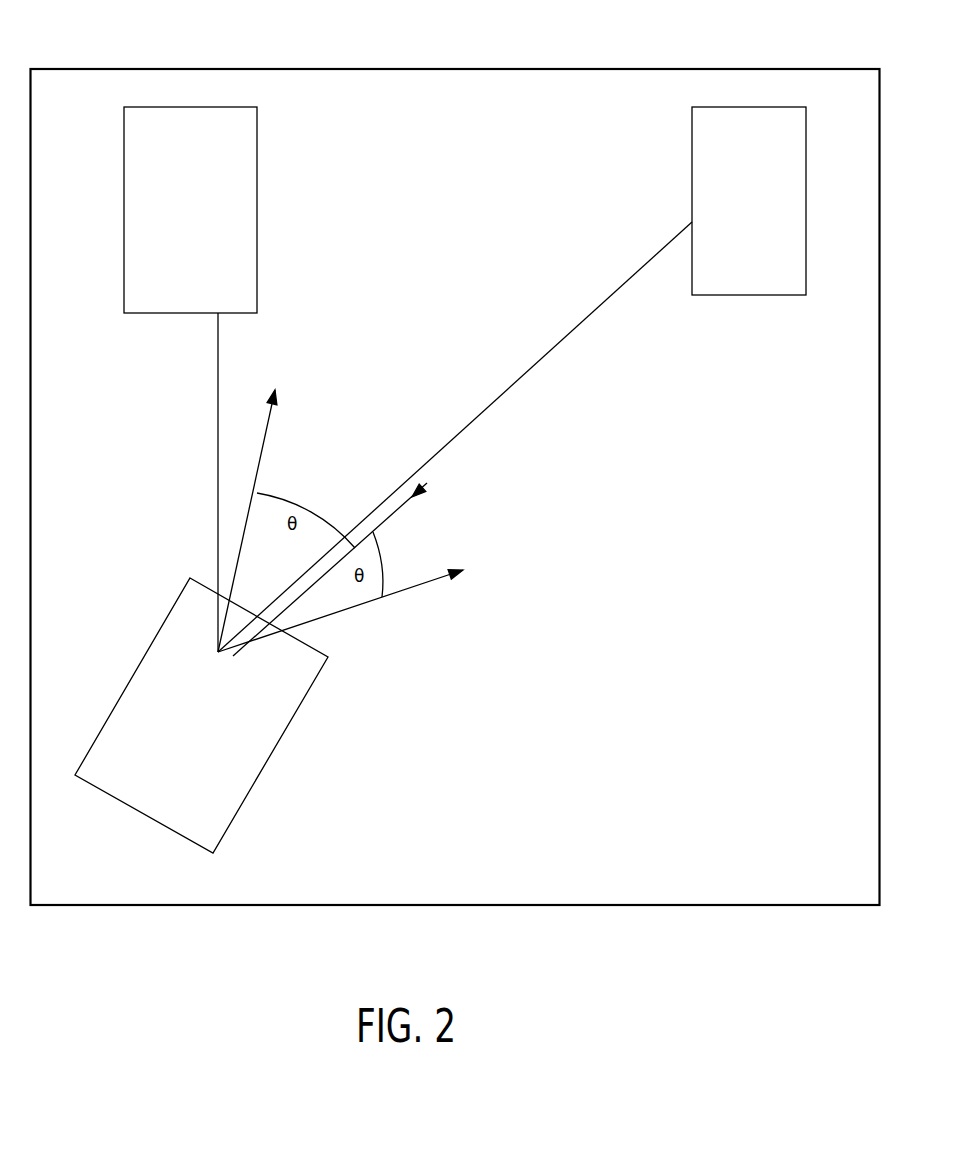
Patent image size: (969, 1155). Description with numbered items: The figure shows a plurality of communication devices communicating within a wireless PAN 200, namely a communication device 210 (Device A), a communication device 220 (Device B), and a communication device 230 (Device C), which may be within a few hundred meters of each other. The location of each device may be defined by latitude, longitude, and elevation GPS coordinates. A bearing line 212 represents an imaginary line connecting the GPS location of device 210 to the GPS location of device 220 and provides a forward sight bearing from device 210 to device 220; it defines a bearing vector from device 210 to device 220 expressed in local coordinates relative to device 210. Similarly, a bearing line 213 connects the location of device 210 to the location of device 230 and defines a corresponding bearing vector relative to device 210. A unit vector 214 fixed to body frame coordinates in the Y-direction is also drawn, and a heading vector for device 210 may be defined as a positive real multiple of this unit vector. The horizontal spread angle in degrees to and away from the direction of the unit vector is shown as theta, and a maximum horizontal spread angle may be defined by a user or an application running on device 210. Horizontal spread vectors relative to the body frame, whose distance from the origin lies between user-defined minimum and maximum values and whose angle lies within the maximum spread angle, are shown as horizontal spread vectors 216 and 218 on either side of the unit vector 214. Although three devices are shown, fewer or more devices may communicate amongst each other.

The wireless PAN 200 is at (616, 68).
The communication device 210 is at (155, 637).
The bearing line 212 is at (635, 266).
The bearing line 213 is at (213, 384).
The unit vector 214 is at (429, 482).
The horizontal spread vector 216 is at (272, 401).
The horizontal spread vector 218 is at (440, 577).
The communication device 220 is at (805, 210).
The communication device 230 is at (258, 173).